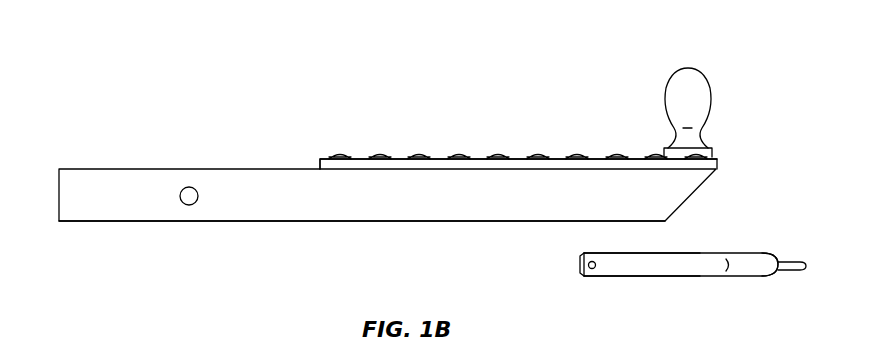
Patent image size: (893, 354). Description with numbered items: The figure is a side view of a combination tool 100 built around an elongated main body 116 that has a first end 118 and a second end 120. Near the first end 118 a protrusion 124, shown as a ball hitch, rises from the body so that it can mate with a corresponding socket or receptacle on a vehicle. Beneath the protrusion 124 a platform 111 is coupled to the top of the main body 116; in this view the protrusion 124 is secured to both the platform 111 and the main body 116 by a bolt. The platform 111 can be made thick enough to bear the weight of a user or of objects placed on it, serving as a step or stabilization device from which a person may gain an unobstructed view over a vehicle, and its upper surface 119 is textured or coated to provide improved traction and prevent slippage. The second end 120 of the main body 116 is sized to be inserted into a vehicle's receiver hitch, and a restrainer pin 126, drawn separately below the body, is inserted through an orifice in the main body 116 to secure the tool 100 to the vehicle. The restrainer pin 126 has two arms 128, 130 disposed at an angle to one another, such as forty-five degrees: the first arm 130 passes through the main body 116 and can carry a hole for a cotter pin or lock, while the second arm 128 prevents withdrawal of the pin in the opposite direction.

The combination tool 100 is at (128, 70).
The platform 111 is at (358, 160).
The main body 116 is at (355, 214).
The first end 118 is at (515, 130).
The surface 119 is at (463, 157).
The second end 120 is at (120, 239).
The protrusion 124 is at (695, 68).
The restrainer pin 126 is at (713, 232).
The second arm 128 is at (748, 274).
The first arm 130 is at (636, 274).